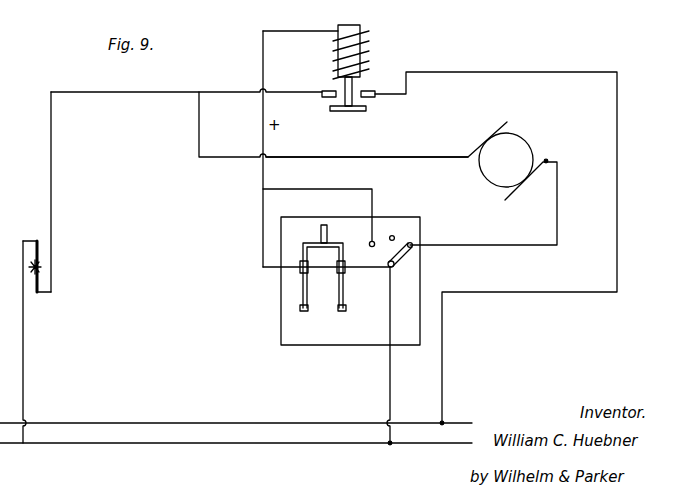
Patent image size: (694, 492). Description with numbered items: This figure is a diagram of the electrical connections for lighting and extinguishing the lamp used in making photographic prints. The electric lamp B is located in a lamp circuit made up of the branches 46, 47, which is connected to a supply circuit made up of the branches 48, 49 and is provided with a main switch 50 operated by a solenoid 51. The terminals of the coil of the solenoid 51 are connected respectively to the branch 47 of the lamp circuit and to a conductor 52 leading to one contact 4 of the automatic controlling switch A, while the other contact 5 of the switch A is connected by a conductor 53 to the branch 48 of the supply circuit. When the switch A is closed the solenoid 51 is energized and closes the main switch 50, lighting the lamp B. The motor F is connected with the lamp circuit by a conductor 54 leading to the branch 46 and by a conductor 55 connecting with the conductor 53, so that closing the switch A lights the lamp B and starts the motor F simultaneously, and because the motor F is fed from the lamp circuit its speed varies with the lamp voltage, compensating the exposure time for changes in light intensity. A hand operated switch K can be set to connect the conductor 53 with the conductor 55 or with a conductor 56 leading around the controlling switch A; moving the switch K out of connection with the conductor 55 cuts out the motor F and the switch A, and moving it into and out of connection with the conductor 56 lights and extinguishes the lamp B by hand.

The solenoid 51 is at (362, 41).
The main switch 50 is at (359, 98).
The branch of the lamp circuit 47 is at (484, 72).
The conductor 54 is at (413, 158).
The motor F is at (506, 160).
The conductor 55 is at (498, 243).
The conductor 56 is at (333, 192).
The conductor 52 is at (262, 226).
The contact device 4 is at (300, 273).
The contact device 5 is at (347, 272).
The lamp controlling switch A is at (309, 307).
The hand operated switch K is at (404, 258).
The conductor 53 is at (390, 375).
The electric lamp B is at (47, 266).
The branch of the lamp circuit 46 is at (23, 355).
The branch of the supply circuit 49 is at (188, 420).
The branch of the supply circuit 48 is at (192, 447).